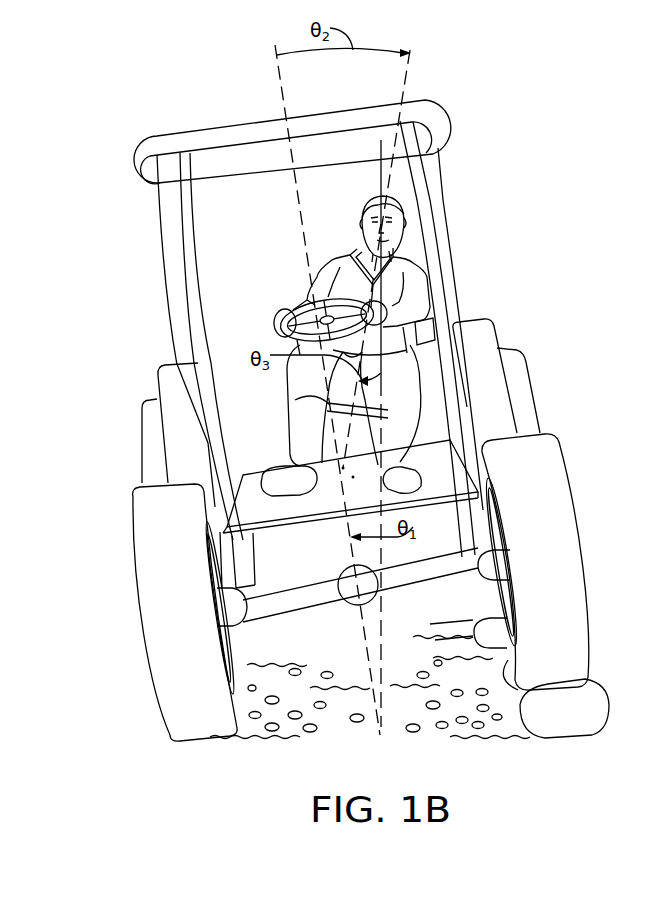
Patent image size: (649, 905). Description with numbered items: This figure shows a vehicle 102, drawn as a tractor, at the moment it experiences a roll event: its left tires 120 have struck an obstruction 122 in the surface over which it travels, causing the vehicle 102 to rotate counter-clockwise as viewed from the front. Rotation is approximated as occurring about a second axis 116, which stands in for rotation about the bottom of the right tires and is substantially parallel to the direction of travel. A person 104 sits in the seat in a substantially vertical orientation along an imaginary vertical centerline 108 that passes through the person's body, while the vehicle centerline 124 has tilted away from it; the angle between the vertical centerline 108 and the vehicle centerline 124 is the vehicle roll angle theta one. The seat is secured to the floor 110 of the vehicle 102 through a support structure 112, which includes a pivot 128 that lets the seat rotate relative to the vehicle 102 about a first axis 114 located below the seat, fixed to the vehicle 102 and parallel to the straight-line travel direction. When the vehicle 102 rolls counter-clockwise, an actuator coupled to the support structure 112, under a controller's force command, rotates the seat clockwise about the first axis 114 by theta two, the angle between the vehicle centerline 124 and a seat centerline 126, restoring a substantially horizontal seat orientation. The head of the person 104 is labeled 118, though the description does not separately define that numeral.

The vehicle 102 is at (152, 143).
The person 104 is at (336, 339).
The vertical centerline 108 is at (380, 147).
The floor 110 is at (260, 505).
The support structure 112 is at (313, 430).
The first axis 114 is at (342, 475).
The second axis 116 is at (382, 727).
The operator head 118 is at (379, 203).
The left tires 120 is at (528, 372).
The obstruction 122 is at (473, 630).
The vehicle centerline 124 is at (277, 70).
The seat centerline 126 is at (412, 62).
The pivot 128 is at (353, 477).